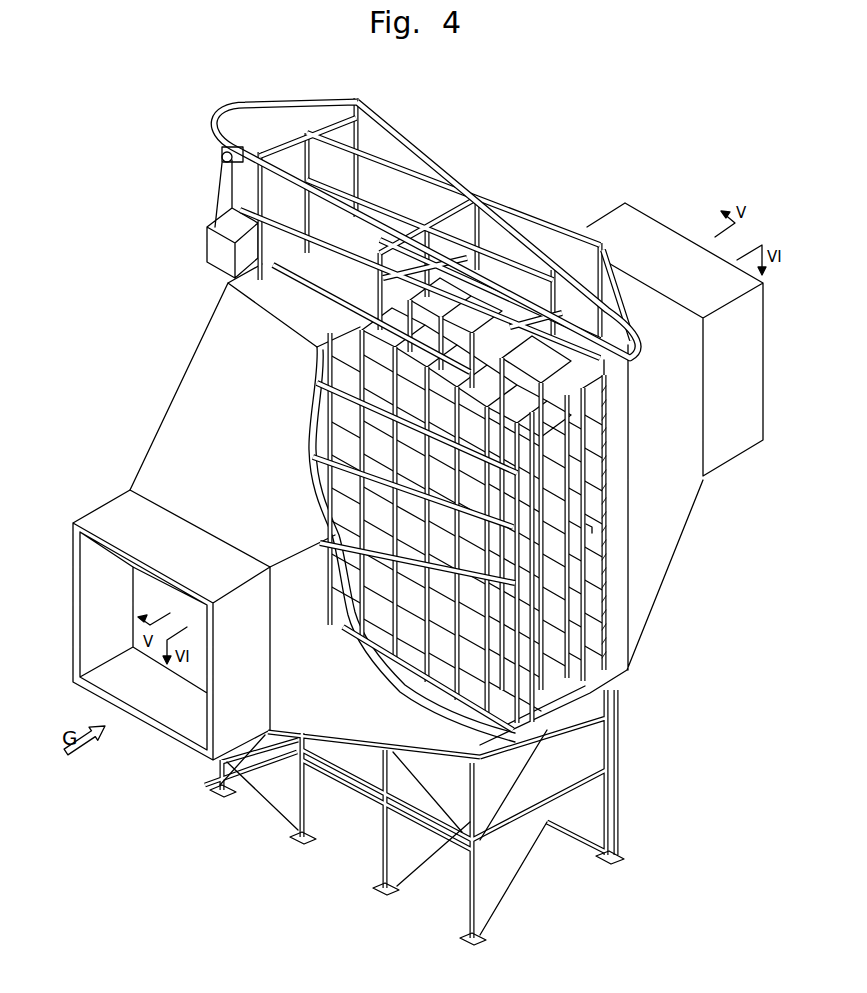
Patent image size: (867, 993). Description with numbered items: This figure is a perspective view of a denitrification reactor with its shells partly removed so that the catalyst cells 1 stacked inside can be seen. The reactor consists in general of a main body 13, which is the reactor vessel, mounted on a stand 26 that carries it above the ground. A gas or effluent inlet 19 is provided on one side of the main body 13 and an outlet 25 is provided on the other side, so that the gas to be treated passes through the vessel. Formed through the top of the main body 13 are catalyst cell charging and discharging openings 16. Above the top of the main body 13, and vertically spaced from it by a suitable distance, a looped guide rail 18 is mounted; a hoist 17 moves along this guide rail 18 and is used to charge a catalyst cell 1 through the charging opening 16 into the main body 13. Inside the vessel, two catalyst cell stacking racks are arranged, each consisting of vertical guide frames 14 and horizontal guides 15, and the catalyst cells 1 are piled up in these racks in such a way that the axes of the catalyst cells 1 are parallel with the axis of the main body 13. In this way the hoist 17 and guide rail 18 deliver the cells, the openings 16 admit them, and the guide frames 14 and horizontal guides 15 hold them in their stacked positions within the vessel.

The catalyst cell 1 is at (213, 243).
The main body 13 is at (190, 373).
The vertical guide frame 14 is at (585, 480).
The horizontal guide 15 is at (588, 527).
The catalyst cell charging and discharging opening 16 is at (310, 280).
The hoist 17 is at (227, 150).
The looped guide rail 18 is at (637, 355).
The gas inlet 19 is at (170, 720).
The outlet 25 is at (637, 212).
The stand 26 is at (620, 768).